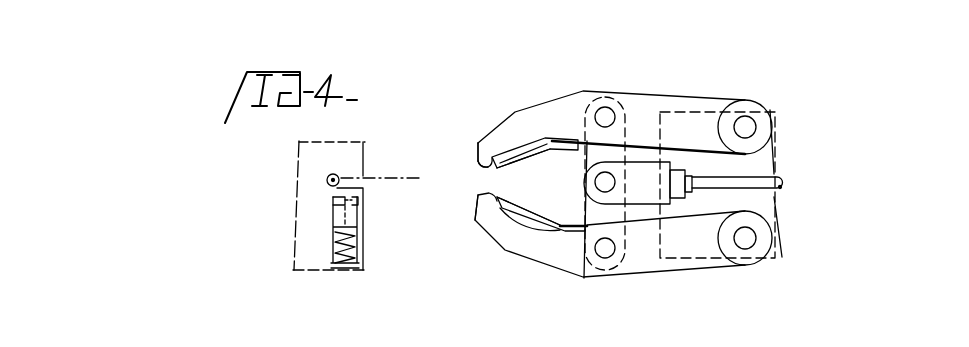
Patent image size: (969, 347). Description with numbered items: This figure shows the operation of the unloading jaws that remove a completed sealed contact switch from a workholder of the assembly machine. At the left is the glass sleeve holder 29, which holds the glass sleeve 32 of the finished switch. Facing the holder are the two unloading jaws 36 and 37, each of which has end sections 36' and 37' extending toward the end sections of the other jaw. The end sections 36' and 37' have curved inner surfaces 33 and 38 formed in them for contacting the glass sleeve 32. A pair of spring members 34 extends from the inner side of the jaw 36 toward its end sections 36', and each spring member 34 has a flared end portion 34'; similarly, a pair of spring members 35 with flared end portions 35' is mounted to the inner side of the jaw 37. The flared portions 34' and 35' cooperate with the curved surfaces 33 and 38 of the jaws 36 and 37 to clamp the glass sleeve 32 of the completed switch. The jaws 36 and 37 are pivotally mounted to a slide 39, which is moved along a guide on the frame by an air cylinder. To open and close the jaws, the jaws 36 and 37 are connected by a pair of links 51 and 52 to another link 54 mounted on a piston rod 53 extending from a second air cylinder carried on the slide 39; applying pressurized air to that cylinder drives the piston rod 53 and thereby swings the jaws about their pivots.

The glass sleeve holder 29 is at (297, 179).
The glass sleeve 32 is at (338, 175).
The curved inner surface 33 is at (490, 194).
The spring members 34 is at (542, 245).
The flared end portion 34' is at (508, 234).
The spring members 35 is at (535, 137).
The flared end portion 35' is at (527, 168).
The unloading jaw 36 is at (610, 254).
The end section 36' is at (448, 222).
The unloading jaw 37 is at (611, 109).
The end section 37' is at (488, 124).
The curved inner surface 38 is at (481, 168).
The slide 39 is at (763, 205).
The link 51 is at (583, 212).
The link 52 is at (612, 148).
The piston rod 53 is at (759, 188).
The link 54 is at (653, 197).